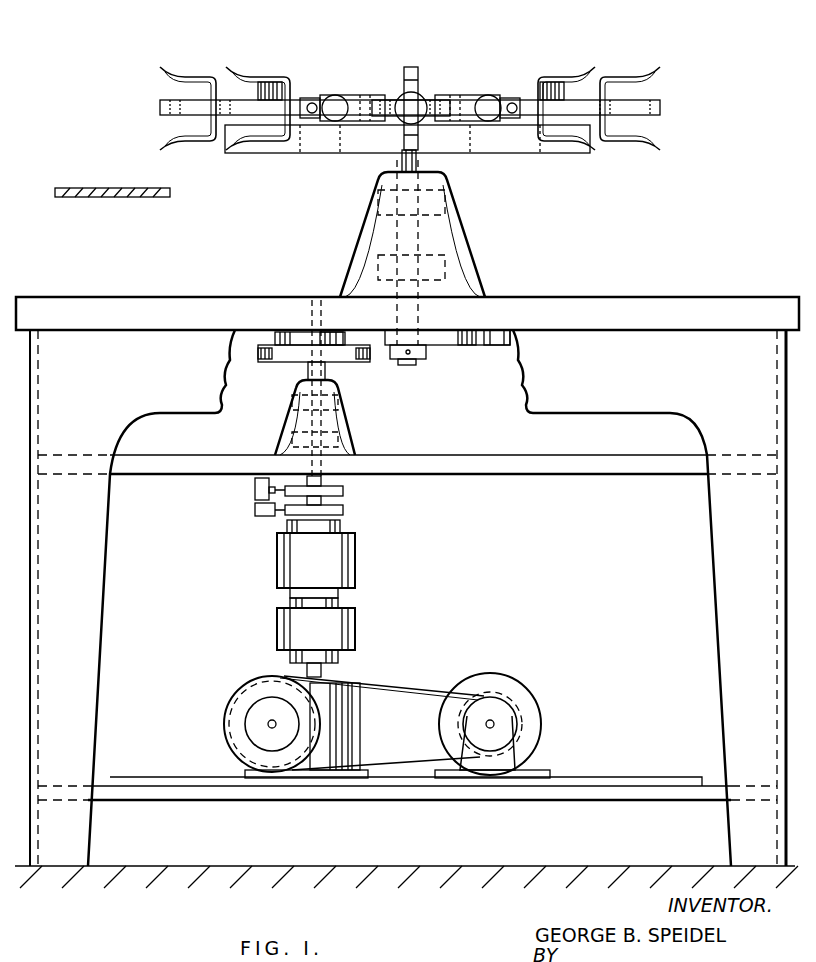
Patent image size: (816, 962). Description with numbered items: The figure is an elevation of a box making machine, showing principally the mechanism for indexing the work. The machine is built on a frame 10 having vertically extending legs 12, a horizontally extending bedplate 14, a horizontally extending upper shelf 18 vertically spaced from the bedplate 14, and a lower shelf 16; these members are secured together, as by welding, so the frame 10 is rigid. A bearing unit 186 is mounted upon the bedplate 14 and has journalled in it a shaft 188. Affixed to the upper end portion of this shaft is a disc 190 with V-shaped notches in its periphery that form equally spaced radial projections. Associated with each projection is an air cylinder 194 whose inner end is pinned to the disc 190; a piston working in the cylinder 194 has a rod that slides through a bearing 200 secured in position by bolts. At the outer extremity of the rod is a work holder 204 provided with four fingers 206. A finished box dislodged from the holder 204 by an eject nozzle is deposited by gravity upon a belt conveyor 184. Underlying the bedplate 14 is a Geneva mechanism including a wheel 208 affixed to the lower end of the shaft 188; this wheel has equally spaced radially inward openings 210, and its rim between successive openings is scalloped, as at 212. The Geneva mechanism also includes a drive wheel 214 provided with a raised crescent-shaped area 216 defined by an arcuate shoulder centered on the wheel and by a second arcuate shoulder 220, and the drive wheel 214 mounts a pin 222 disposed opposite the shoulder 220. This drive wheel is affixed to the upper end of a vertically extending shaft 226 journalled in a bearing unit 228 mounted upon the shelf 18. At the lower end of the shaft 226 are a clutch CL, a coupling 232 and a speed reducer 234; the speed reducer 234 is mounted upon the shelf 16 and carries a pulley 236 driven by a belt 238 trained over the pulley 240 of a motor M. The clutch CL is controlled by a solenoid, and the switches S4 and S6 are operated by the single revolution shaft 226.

The frame 10 is at (698, 614).
The legs 12 is at (708, 536).
The bedplate 14 is at (592, 302).
The lower shelf 16 is at (535, 797).
The upper shelf 18 is at (482, 476).
The belt conveyor 184 is at (84, 200).
The bearing unit 186 is at (465, 244).
The shaft 188 is at (420, 160).
The disc 190 is at (338, 148).
The air cylinder 194 is at (312, 96).
The bearing 200 is at (300, 130).
The work holder 204 is at (257, 70).
The fingers 206 is at (395, 100).
The wheel 208 is at (505, 340).
The openings 210 is at (486, 338).
The scalloped rim 212 is at (448, 340).
The drive wheel 214 is at (281, 358).
The crescent-shaped area 216 is at (300, 338).
The second arcuate shoulder 220 is at (326, 338).
The pin 222 is at (348, 364).
The shaft 226 is at (329, 495).
The bearing unit 228 is at (350, 430).
The coupling 232 is at (358, 624).
The speed reducer 234 is at (352, 730).
The pulley 236 is at (225, 726).
The belt 238 is at (414, 686).
The pulley 240 is at (516, 716).
The clutch CL is at (356, 570).
The motor M is at (520, 694).
The switch S4 is at (250, 498).
The switch S6 is at (270, 518).